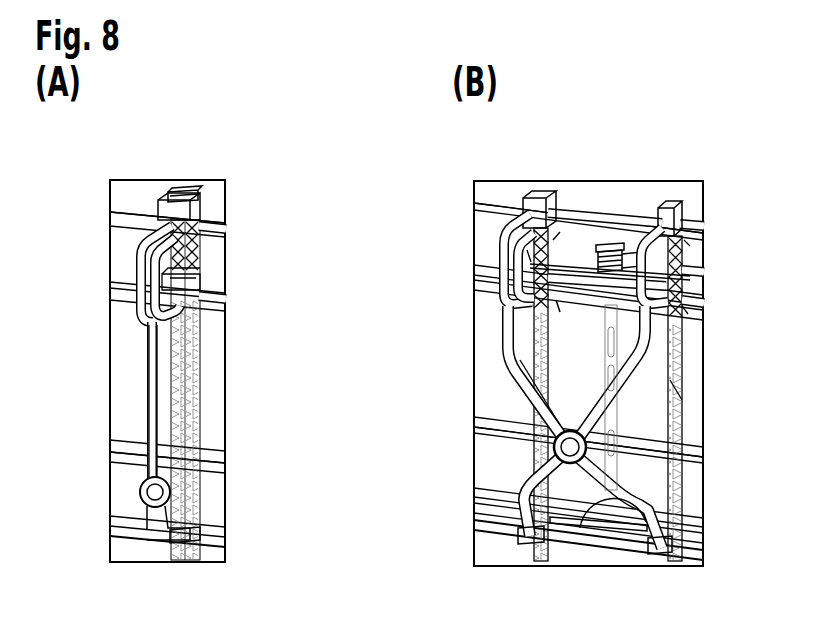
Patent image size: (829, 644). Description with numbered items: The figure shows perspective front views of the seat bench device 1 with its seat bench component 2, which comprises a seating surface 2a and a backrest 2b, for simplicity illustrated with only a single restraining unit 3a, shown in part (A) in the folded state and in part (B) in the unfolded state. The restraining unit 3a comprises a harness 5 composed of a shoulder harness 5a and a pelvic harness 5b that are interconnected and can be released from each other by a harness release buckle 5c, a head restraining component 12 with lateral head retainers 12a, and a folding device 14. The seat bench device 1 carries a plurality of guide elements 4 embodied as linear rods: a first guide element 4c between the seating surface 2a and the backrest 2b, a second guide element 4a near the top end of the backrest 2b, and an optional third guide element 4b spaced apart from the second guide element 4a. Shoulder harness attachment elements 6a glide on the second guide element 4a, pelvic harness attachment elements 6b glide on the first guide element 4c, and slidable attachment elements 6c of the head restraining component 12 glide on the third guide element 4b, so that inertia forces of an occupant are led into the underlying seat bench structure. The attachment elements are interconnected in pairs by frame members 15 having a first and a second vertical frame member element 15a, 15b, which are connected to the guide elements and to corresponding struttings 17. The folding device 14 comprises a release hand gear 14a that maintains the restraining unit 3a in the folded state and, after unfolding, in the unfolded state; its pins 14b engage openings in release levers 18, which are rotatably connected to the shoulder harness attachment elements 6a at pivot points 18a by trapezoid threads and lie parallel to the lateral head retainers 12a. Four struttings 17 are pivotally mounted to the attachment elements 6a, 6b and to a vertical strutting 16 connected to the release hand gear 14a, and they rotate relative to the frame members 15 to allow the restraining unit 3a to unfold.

The seat bench device 1 is at (104, 176).
The seat bench component 2 is at (103, 458).
The seating surface 2a is at (123, 540).
The backrest 2b is at (123, 480).
The restraining unit 3a is at (215, 255).
The guide elements 4 is at (123, 200).
The second guide element 4a is at (125, 285).
The third guide element 4b is at (125, 217).
The first guide element 4c is at (123, 522).
The harness 5 is at (138, 392).
The shoulder harness 5a is at (147, 420).
The pelvic harness 5b is at (149, 520).
The harness release buckle 5c is at (160, 492).
The shoulder harness attachment elements 6a is at (204, 308).
The pelvic harness attachment elements 6b is at (188, 552).
The slidable attachment elements 6c is at (210, 207).
The head restraining component 12 is at (123, 247).
The lateral head retainers 12a is at (123, 312).
The folding device 14 is at (206, 192).
The release hand gear 14a is at (185, 190).
The pins 14b is at (642, 250).
The frame members 15 is at (690, 242).
The first vertical frame member element 15a is at (557, 240).
The second vertical frame member element 15b is at (680, 400).
The vertical strutting 16 is at (618, 427).
The struttings 17 is at (588, 264).
The release levers 18 is at (563, 317).
The pivot points 18a is at (522, 250).